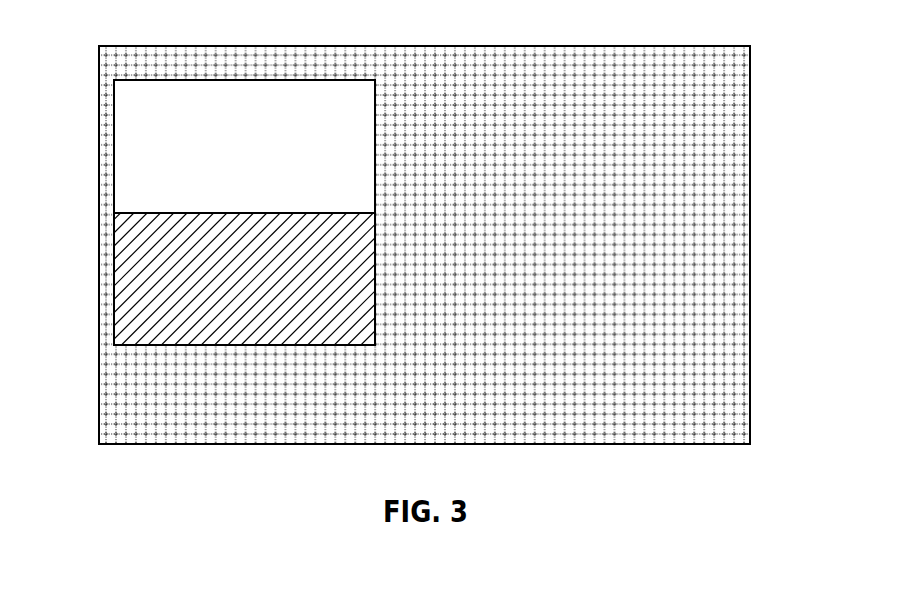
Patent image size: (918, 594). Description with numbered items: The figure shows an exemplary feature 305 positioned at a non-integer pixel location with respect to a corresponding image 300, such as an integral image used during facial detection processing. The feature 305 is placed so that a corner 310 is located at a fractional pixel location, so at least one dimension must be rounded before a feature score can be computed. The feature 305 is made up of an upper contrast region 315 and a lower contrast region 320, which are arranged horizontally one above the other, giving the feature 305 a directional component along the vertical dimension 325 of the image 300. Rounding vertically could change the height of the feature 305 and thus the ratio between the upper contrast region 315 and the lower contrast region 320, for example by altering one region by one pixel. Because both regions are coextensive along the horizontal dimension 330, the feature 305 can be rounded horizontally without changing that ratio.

The image 300 is at (750, 235).
The feature 305 is at (241, 80).
The corner 310 is at (375, 346).
The upper contrast region 315 is at (374, 150).
The lower contrast region 320 is at (375, 282).
The vertical dimension 325 is at (99, 357).
The horizontal dimension 330 is at (345, 445).